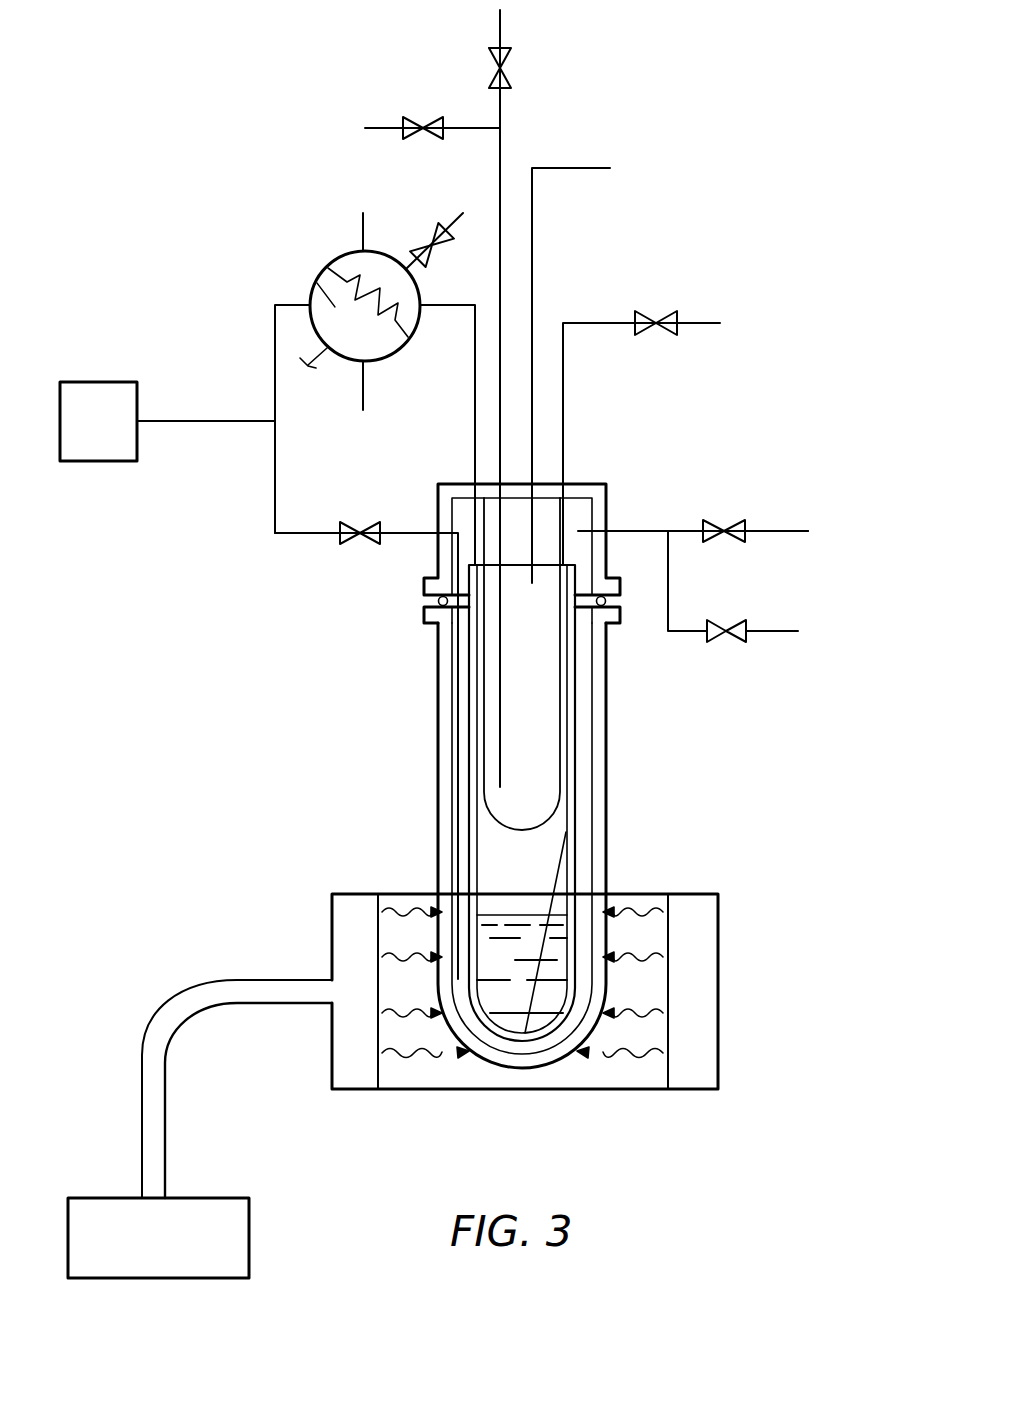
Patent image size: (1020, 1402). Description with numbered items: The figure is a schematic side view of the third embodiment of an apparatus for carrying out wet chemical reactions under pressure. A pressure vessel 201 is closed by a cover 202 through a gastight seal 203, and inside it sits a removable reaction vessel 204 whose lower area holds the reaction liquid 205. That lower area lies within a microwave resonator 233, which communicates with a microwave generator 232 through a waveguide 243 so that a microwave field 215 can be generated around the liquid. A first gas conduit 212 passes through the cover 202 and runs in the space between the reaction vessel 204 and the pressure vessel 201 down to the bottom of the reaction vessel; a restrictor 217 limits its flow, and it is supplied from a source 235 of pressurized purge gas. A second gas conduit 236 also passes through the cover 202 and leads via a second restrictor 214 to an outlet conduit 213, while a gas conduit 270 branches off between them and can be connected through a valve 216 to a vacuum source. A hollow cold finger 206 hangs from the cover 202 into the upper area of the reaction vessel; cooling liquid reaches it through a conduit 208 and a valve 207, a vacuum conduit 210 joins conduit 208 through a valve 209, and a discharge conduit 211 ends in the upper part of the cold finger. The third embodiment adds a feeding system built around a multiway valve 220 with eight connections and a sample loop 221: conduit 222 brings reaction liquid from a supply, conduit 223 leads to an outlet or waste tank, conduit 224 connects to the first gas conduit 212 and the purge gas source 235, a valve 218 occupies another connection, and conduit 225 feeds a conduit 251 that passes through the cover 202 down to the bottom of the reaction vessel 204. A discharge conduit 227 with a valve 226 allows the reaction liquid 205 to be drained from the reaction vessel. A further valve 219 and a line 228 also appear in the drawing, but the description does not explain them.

The pressure vessel 201 is at (607, 770).
The cover 202 is at (435, 554).
The gastight seal 203 is at (430, 603).
The reaction vessel 204 is at (568, 705).
The reaction liquid 205 is at (497, 1066).
The cold finger 206 is at (564, 658).
The valve 207 is at (430, 126).
The cooling liquid conduit 208 is at (368, 128).
The valve 209 is at (506, 78).
The vacuum conduit 210 is at (503, 31).
The discharge conduit 211 is at (592, 167).
The first gas conduit 212 is at (188, 420).
The outlet conduit 213 is at (800, 530).
The second restrictor 214 is at (738, 520).
The microwave field 215 is at (582, 1073).
The valve 216 is at (728, 640).
The restrictor 217 is at (348, 526).
The valve 218 is at (436, 257).
The valve 219 is at (458, 212).
The multiway valve 220 is at (312, 290).
The sample loop 221 is at (347, 282).
The conduit 222 is at (362, 213).
The conduit 223 is at (363, 379).
The conduit 224 is at (275, 352).
The conduit 225 is at (475, 362).
The valve 226 is at (656, 322).
The discharge conduit 227 is at (607, 322).
The feed tube 228 is at (412, 530).
The microwave generator 232 is at (113, 1215).
The microwave resonator 233 is at (350, 917).
The source of pressurized purge gas 235 is at (108, 394).
The second gas conduit 236 is at (637, 530).
The waveguide 243 is at (177, 1010).
The conduit 251 is at (480, 828).
The gas conduit 270 is at (782, 634).